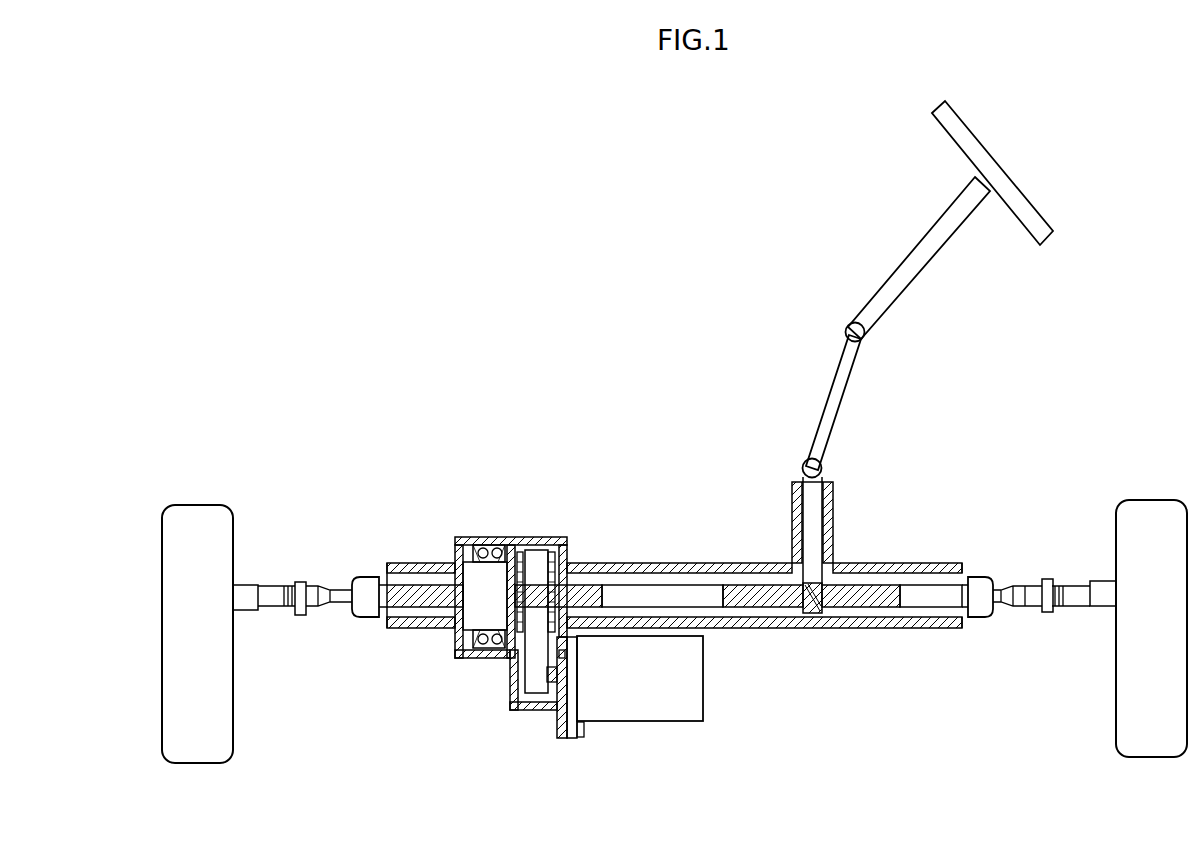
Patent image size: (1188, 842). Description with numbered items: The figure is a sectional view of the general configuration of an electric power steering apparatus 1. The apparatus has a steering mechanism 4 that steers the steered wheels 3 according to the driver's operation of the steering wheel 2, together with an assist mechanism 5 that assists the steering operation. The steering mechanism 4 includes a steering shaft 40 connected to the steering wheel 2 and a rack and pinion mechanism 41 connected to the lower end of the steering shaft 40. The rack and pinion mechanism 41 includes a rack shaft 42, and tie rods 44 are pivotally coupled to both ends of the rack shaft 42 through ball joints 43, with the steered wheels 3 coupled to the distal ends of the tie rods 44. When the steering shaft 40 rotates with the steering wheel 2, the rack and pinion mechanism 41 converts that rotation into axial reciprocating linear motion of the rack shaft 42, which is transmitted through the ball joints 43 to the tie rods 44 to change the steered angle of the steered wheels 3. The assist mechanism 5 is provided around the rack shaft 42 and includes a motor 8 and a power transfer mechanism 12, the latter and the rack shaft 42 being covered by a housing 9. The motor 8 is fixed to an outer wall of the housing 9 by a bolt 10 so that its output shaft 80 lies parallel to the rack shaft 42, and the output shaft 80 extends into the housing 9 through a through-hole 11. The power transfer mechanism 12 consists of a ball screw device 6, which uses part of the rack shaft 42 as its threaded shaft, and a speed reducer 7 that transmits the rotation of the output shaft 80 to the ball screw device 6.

The electric power steering apparatus 1 is at (679, 232).
The steering wheel 2 is at (972, 128).
The steered wheels 3 is at (196, 505).
The steering mechanism 4 is at (879, 327).
The steering shaft 40 is at (830, 373).
The rack and pinion mechanism 41 is at (828, 612).
The rack shaft 42 is at (718, 610).
The ball joints 43 is at (368, 618).
The tie rods 44 is at (290, 614).
The assist mechanism 5 is at (673, 575).
The ball screw device 6 is at (462, 658).
The speed reducer 7 is at (518, 652).
The motor 8 is at (639, 723).
The housing 9 is at (533, 537).
The bolt 10 is at (585, 738).
The through-hole 11 is at (567, 660).
The power transfer mechanism 12 is at (506, 614).
The output shaft 80 is at (560, 688).